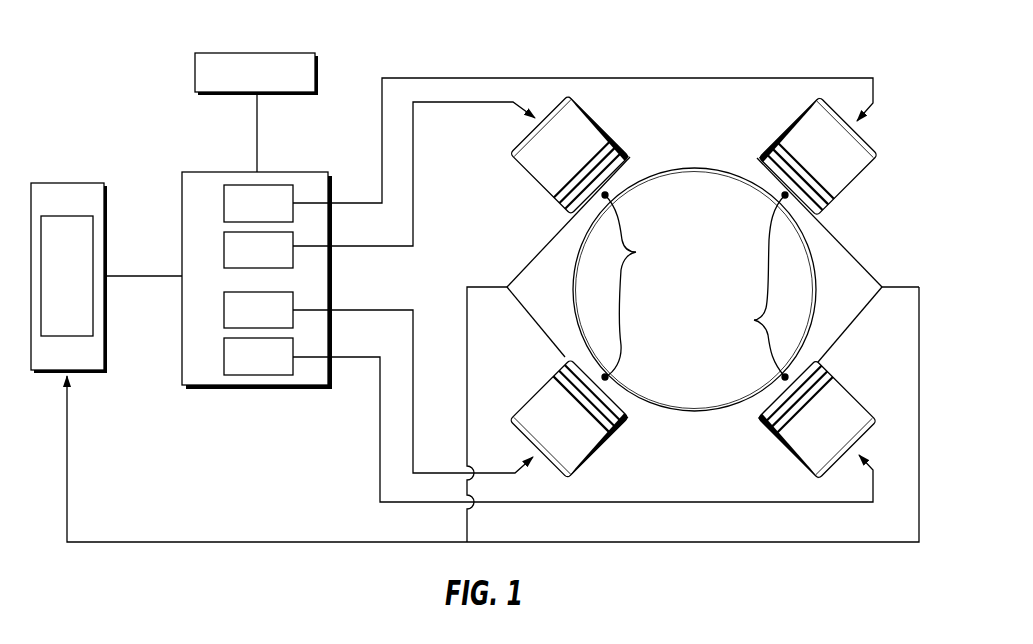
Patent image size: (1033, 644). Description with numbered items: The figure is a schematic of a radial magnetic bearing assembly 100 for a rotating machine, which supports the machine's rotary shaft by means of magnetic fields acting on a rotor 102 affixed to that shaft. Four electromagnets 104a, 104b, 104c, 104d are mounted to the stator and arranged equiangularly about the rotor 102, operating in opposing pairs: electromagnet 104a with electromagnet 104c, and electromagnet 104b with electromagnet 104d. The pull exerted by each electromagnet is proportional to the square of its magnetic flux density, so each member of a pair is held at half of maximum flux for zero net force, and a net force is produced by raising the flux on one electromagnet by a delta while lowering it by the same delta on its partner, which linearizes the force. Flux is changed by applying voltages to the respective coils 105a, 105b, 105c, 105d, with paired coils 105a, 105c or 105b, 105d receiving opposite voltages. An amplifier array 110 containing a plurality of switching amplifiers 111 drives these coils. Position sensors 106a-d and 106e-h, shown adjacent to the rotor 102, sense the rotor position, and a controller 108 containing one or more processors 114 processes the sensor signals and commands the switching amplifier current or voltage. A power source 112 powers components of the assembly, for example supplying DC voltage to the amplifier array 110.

The radial magnetic bearing assembly 100 is at (127, 40).
The rotor 102 is at (689, 168).
The electromagnet 104a is at (520, 167).
The electromagnet 104b is at (860, 178).
The electromagnet 104c is at (787, 447).
The electromagnet 104d is at (530, 410).
The coil 105a is at (638, 156).
The coil 105b is at (824, 205).
The coil 105c is at (833, 382).
The coil 105d is at (607, 421).
The position sensors 106a-d is at (656, 286).
The position sensors 106e-h is at (733, 286).
The controller 108 is at (68, 182).
The amplifier array 110 is at (210, 171).
The switching amplifiers 111 is at (277, 214).
The power source 112 is at (273, 83).
The processor 114 is at (87, 289).